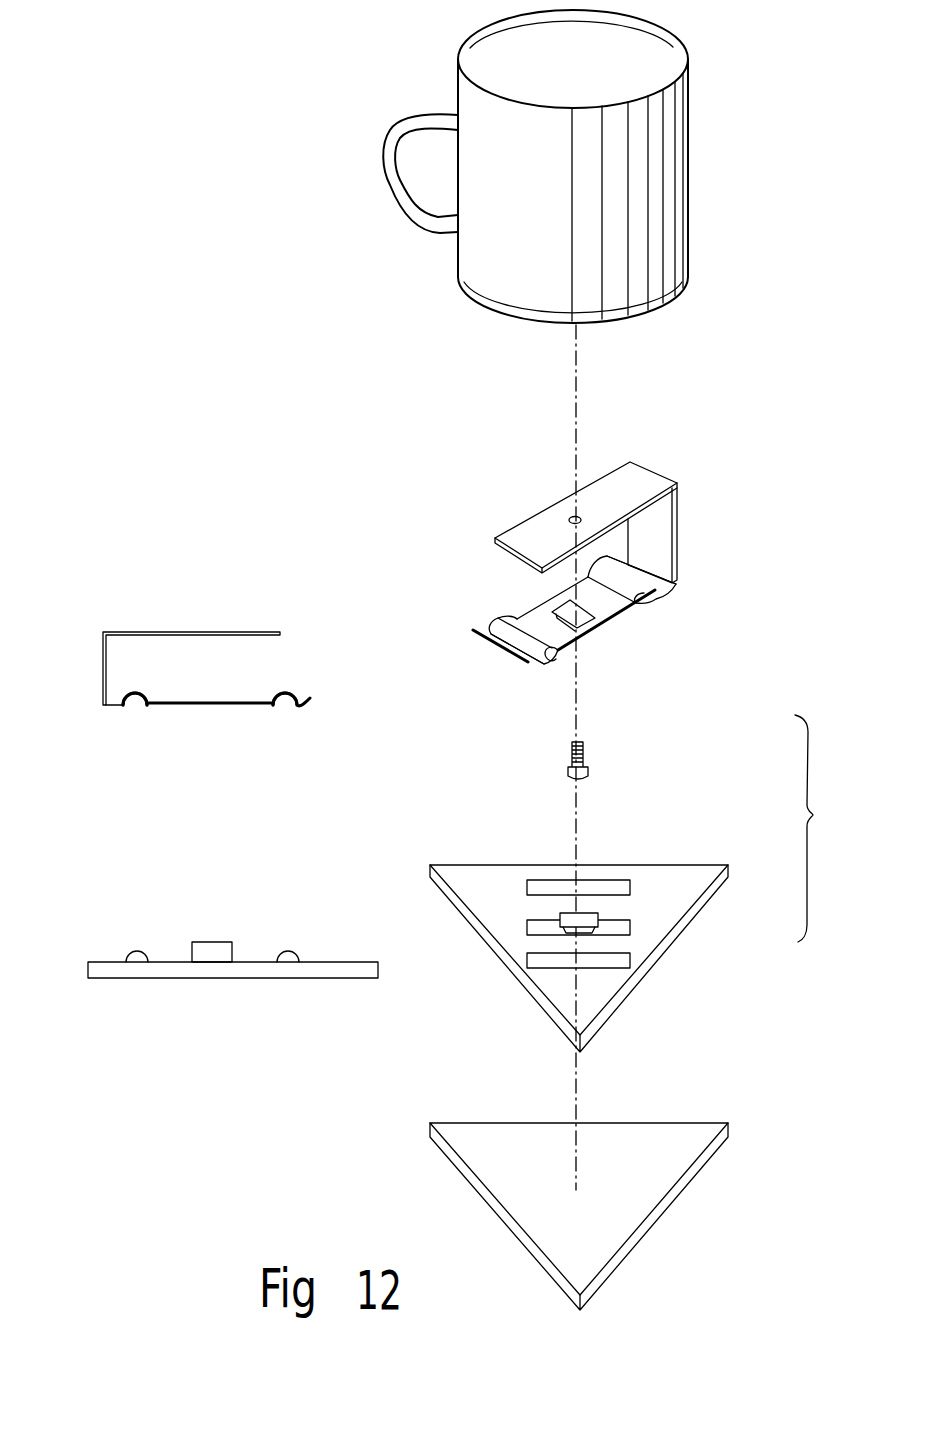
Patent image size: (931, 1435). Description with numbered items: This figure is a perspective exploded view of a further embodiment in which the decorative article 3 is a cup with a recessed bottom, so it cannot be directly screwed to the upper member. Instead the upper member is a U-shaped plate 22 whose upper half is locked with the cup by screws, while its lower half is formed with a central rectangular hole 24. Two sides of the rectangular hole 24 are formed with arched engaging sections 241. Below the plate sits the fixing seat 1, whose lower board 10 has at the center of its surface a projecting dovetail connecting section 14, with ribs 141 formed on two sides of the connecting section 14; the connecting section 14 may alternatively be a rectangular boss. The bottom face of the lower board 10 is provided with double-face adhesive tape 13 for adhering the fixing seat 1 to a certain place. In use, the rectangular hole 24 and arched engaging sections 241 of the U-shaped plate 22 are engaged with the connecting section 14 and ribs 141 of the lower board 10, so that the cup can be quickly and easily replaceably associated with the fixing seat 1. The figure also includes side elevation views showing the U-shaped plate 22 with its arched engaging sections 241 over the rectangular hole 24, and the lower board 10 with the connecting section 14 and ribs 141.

The fixing seat 1 is at (822, 828).
The decorative article 3 is at (713, 202).
The lower board 10 is at (498, 957).
The double-face adhesive tape 13 is at (525, 1207).
The connecting section 14 is at (592, 922).
The ribs 141 is at (615, 878).
The U-shaped plate 22 is at (677, 522).
The rectangular hole 24 is at (598, 627).
The arched engaging sections 241 is at (630, 580).